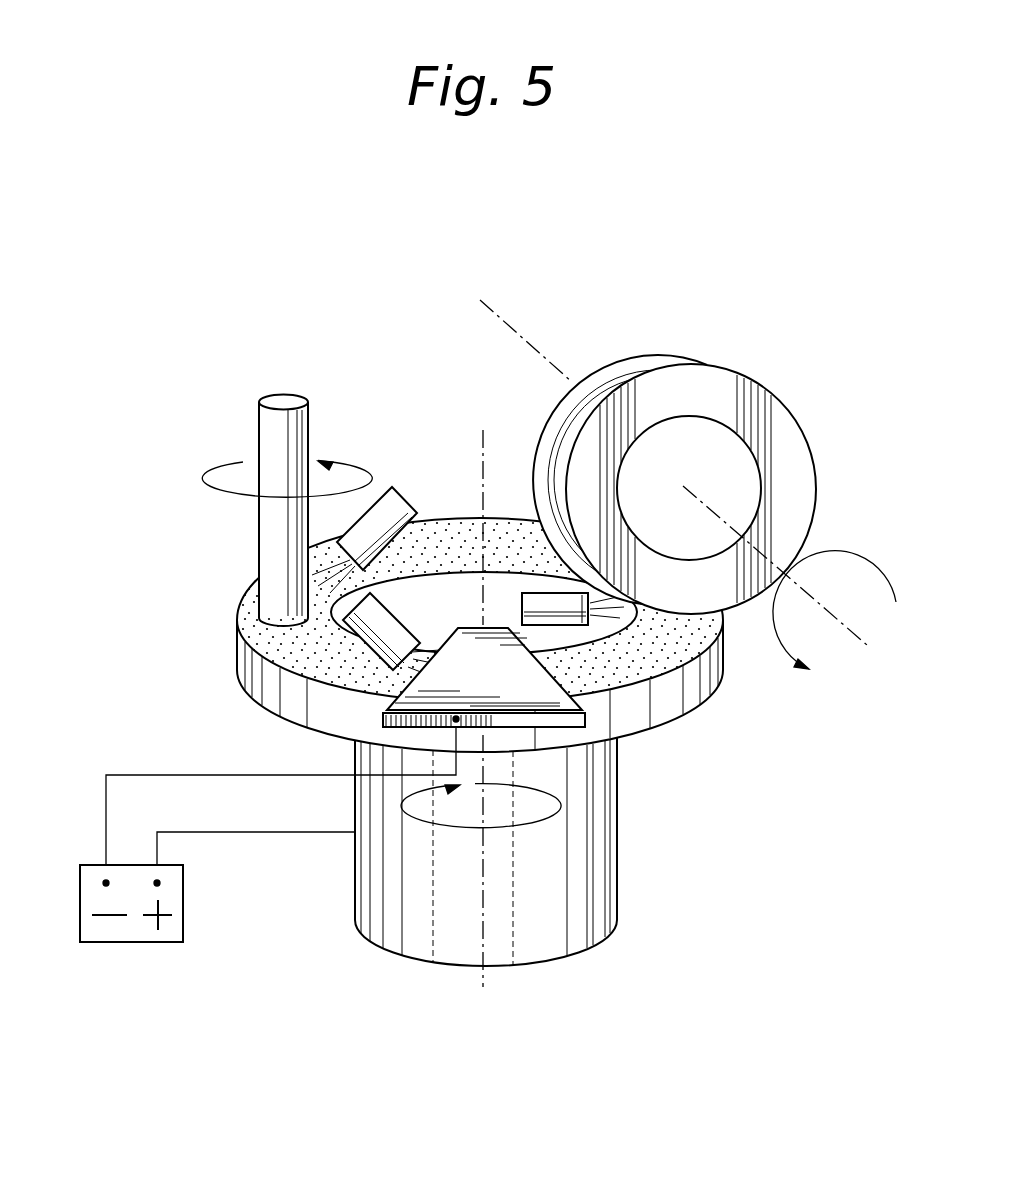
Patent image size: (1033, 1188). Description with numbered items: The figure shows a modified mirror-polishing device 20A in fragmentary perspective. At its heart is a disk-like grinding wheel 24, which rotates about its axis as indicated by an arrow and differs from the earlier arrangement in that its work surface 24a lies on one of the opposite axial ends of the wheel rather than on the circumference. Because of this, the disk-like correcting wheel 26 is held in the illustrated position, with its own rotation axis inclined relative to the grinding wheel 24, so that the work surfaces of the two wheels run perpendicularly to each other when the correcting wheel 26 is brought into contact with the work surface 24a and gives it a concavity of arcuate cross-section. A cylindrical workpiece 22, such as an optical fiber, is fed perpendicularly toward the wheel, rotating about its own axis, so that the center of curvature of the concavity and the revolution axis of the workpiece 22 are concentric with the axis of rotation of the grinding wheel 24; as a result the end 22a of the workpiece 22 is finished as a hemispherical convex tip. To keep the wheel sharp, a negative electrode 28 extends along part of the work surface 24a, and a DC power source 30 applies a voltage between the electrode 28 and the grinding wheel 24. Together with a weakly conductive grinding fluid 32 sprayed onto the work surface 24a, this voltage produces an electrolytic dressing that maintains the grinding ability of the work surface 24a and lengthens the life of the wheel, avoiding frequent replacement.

The mirror-polishing device 20A is at (513, 565).
The workpiece 22 is at (258, 503).
The end of the workpiece 22a is at (270, 630).
The grinding wheel 24 is at (472, 638).
The work surface 24a is at (305, 657).
The correcting wheel 26 is at (688, 459).
The negative electrode 28 is at (532, 692).
The DC power source 30 is at (113, 942).
The grinding fluid 32 is at (550, 600).